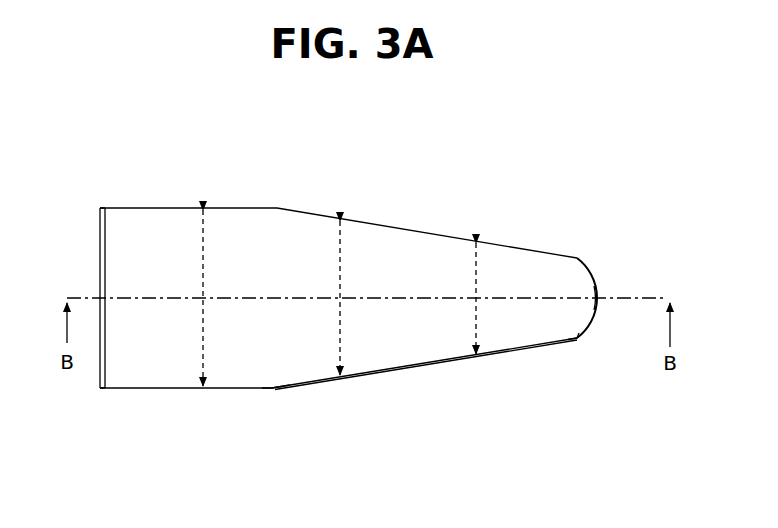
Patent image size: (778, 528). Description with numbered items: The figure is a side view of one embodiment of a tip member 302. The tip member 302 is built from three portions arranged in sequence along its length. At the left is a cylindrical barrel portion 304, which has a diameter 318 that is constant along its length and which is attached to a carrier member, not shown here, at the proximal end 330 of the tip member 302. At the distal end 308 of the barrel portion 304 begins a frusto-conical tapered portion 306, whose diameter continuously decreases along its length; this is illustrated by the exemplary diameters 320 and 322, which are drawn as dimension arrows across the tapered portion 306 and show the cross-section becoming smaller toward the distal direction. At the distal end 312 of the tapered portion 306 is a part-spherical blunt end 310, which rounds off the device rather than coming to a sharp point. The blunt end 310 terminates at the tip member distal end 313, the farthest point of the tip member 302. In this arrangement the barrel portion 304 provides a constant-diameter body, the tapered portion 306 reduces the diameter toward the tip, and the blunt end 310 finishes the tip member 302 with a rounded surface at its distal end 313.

The tip member 302 is at (334, 281).
The cylindrical barrel portion 304 is at (150, 393).
The frusto-conical tapered portion 306 is at (392, 373).
The distal end of barrel portion 308 is at (272, 393).
The part-spherical blunt end 310 is at (588, 273).
The distal end of tapered portion 312 is at (577, 338).
The tip member distal end 313 is at (602, 289).
The diameter of cylindrical barrel portion 318 is at (203, 257).
The exemplary diameter of tapered portion 320 is at (340, 293).
The exemplary diameter of tapered portion 322 is at (476, 289).
The proximal end of tip member 330 is at (100, 256).